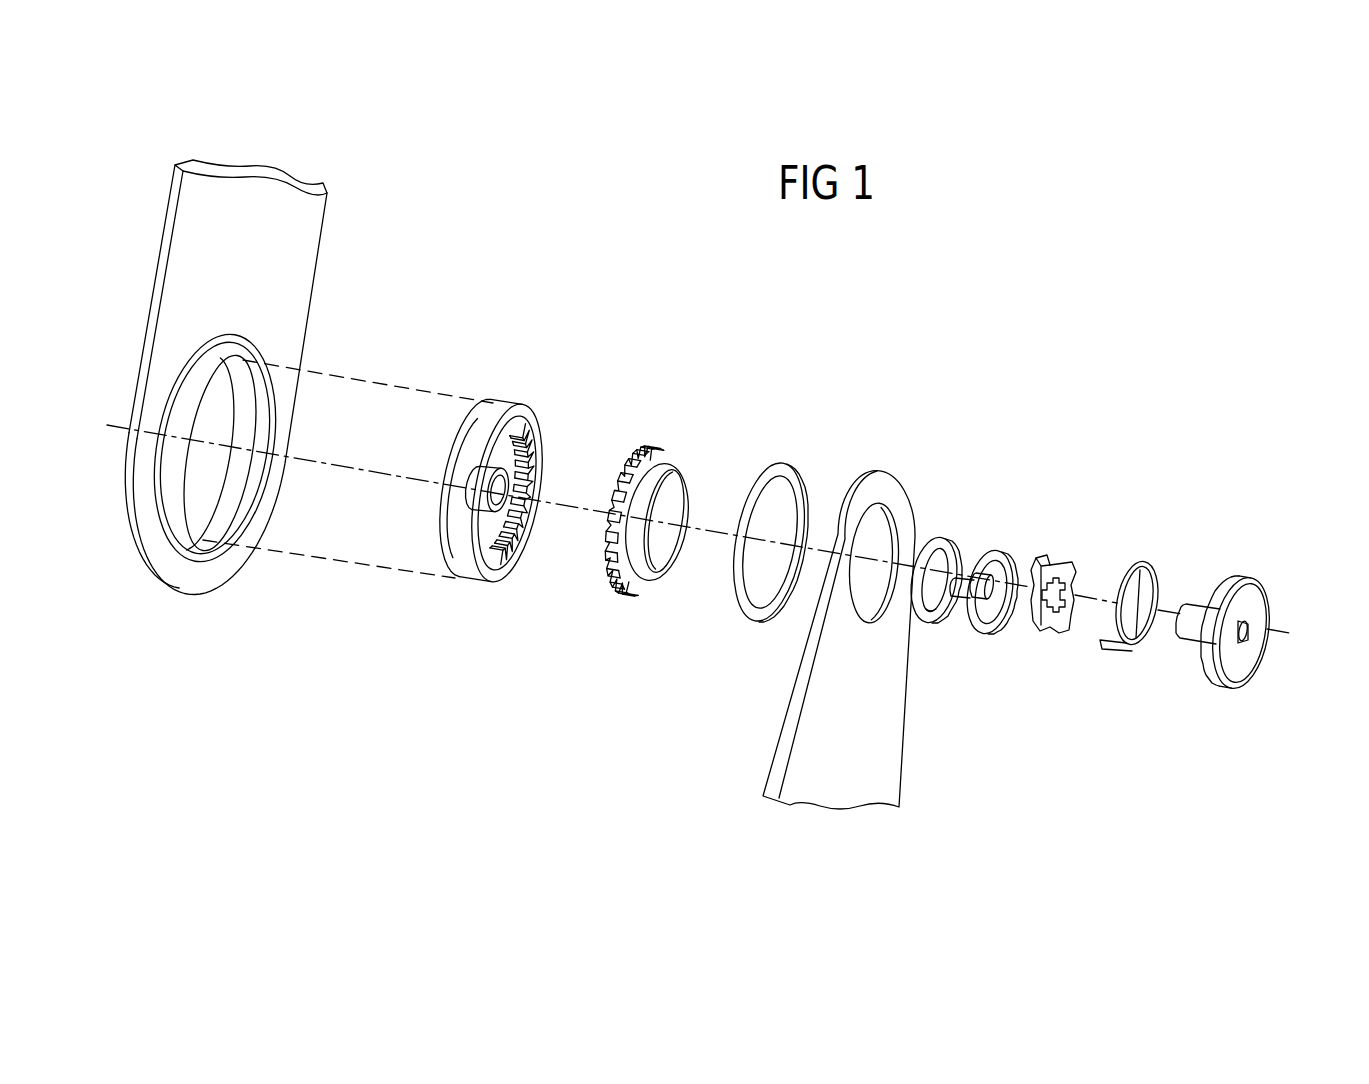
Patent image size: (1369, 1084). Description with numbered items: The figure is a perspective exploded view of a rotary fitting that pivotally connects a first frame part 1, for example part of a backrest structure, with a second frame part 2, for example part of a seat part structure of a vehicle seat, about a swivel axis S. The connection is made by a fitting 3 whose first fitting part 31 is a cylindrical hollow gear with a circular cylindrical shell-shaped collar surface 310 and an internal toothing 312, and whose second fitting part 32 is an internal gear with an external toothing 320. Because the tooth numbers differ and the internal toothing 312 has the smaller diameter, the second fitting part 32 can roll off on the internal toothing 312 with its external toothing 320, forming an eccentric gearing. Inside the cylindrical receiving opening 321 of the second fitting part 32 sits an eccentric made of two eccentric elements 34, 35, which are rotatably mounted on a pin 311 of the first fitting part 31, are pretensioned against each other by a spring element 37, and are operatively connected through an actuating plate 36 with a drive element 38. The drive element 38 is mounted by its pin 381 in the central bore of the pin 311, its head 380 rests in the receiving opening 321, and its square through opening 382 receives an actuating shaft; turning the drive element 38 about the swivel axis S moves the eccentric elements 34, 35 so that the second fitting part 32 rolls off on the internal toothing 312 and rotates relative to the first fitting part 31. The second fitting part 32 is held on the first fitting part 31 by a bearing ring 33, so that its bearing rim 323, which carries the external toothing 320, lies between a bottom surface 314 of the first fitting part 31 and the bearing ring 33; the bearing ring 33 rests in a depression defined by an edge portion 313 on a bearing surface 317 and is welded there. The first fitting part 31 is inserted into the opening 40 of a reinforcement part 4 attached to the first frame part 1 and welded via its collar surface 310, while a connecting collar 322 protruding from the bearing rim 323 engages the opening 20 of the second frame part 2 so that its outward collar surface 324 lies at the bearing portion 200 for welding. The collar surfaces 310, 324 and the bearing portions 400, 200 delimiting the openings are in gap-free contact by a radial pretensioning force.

The first frame part 1 is at (302, 252).
The reinforcement part 4 is at (232, 345).
The opening of the reinforcement part 40 is at (202, 512).
The bearing portion 400 is at (225, 537).
The fitting 3 is at (690, 358).
The first fitting part 31 is at (509, 513).
The collar surface 310 is at (465, 582).
The pin 311 is at (530, 428).
The internal toothing 312 is at (514, 548).
The edge portion 313 is at (542, 440).
The bottom surface 314 is at (492, 452).
The bearing surface 317 is at (519, 537).
The second fitting part 32 is at (652, 564).
The external toothing 320 is at (614, 590).
The cylindrical receiving opening 321 is at (657, 553).
The connecting collar 322 is at (687, 478).
The bearing rim 323 is at (636, 619).
The collar surface 324 is at (645, 487).
The bearing ring 33 is at (784, 464).
The second frame part 2 is at (834, 787).
The opening of the second frame part 20 is at (879, 530).
The bearing portion 200 is at (872, 596).
The eccentric element 34 is at (931, 626).
The eccentric element 35 is at (995, 548).
The actuating plate 36 is at (1073, 563).
The spring element 37 is at (1153, 568).
The drive element 38 is at (1242, 640).
The head 380 is at (1215, 682).
The pin 381 is at (1190, 633).
The through opening 382 is at (1247, 640).
The swivel axis S is at (1282, 637).